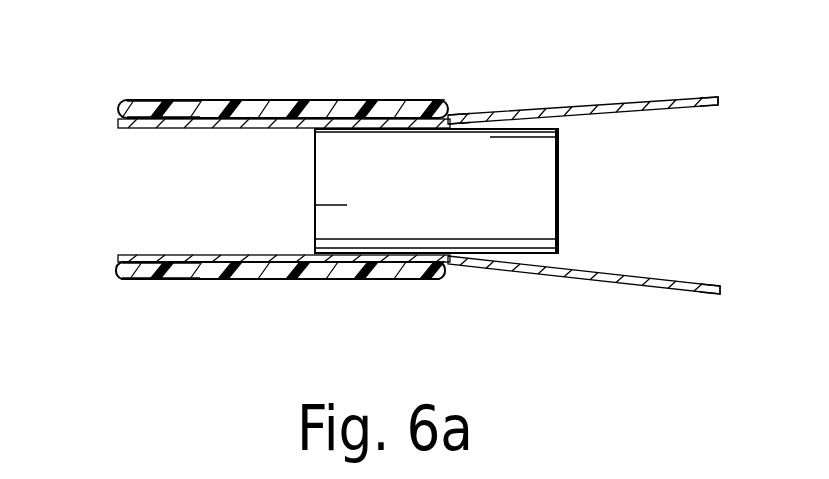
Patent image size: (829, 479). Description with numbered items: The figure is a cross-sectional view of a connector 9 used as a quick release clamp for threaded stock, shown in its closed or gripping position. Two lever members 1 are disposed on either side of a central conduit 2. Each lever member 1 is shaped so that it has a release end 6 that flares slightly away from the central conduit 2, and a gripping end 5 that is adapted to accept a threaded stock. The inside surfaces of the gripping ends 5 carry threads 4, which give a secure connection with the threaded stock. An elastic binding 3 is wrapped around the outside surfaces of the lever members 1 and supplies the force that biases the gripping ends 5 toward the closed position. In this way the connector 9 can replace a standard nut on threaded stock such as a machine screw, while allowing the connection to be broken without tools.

The lever member 1 is at (627, 98).
The central conduit 2 is at (437, 208).
The elastic binding 3 is at (257, 110).
The threads 4 is at (140, 128).
The gripping end 5 is at (175, 100).
The release end 6 is at (698, 100).
The connector 9 is at (478, 108).